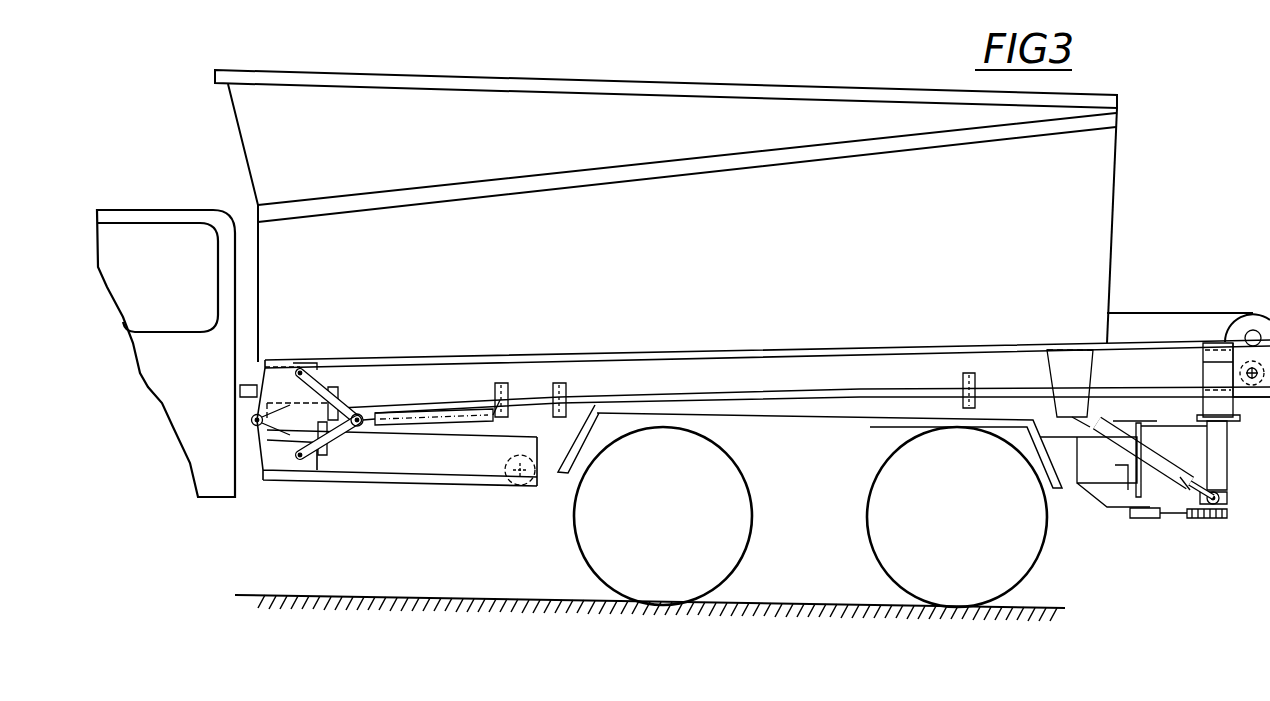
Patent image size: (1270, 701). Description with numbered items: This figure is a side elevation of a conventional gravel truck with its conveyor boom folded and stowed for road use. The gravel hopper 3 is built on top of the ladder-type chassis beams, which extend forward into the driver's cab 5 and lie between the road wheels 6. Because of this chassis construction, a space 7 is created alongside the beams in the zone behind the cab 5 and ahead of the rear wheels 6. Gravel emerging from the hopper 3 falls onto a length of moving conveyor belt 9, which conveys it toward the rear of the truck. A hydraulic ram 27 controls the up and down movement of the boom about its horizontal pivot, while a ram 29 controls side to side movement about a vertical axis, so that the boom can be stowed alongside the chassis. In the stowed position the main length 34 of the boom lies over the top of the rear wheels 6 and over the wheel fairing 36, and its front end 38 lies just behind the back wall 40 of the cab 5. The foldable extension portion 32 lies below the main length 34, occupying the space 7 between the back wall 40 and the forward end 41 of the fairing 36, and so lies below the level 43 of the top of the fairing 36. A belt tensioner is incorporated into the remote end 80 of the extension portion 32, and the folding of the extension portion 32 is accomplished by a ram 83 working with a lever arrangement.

The hopper 3 is at (310, 103).
The driver's cab 5 is at (165, 248).
The road wheels 6 is at (727, 566).
The space 7 is at (325, 512).
The length of moving conveyor belt 9 is at (1163, 313).
The hydraulic ram 27 is at (1168, 470).
The ram 29 is at (1150, 525).
The foldable extension portion 32 is at (415, 470).
The main length of the boom 34 is at (673, 372).
The wheel fairing 36 is at (827, 419).
The front end of the main length 38 is at (263, 357).
The back wall of the cab 40 is at (232, 484).
The forward end of the fairing 41 is at (557, 477).
The level of the top of the fairing 43 is at (760, 408).
The remote end of the extension 80 is at (535, 490).
The ram 83 is at (427, 420).